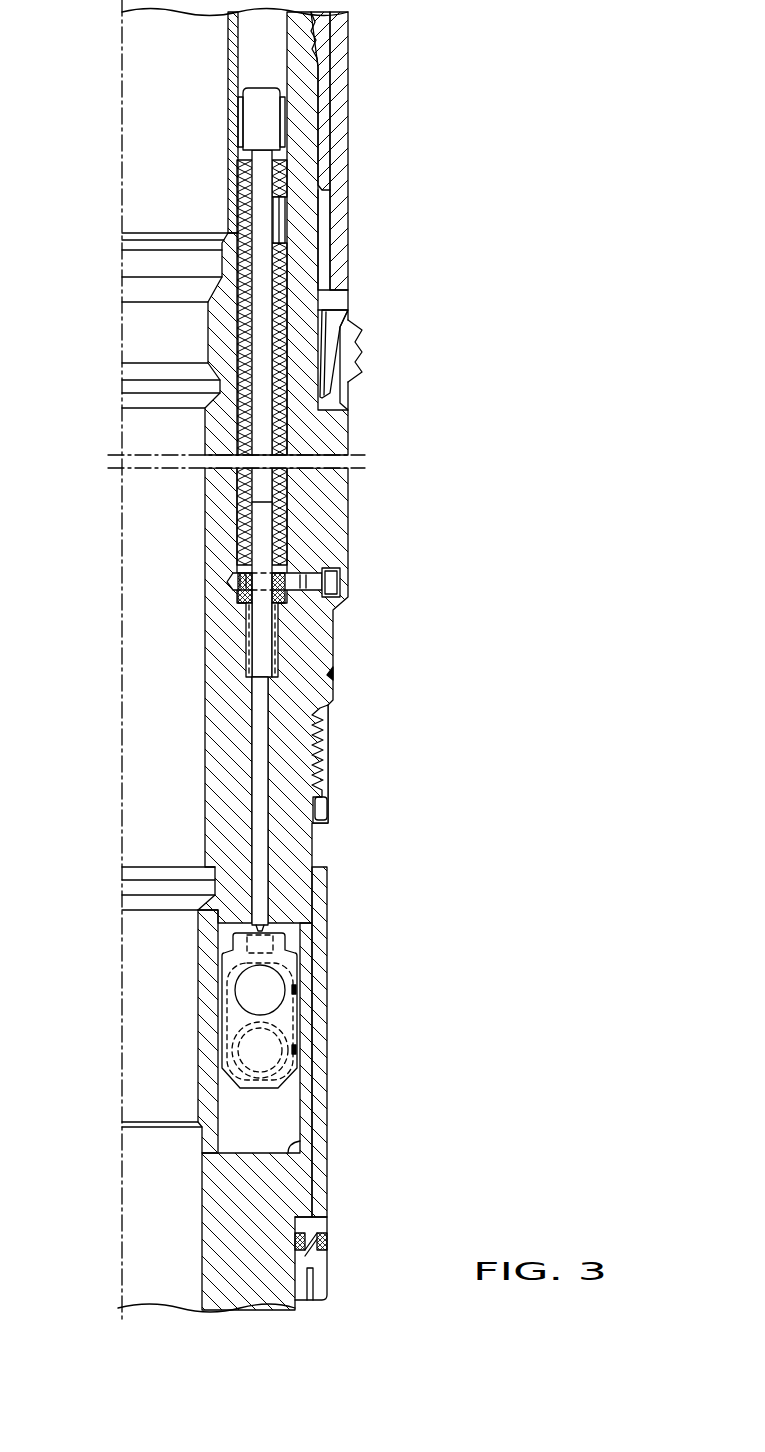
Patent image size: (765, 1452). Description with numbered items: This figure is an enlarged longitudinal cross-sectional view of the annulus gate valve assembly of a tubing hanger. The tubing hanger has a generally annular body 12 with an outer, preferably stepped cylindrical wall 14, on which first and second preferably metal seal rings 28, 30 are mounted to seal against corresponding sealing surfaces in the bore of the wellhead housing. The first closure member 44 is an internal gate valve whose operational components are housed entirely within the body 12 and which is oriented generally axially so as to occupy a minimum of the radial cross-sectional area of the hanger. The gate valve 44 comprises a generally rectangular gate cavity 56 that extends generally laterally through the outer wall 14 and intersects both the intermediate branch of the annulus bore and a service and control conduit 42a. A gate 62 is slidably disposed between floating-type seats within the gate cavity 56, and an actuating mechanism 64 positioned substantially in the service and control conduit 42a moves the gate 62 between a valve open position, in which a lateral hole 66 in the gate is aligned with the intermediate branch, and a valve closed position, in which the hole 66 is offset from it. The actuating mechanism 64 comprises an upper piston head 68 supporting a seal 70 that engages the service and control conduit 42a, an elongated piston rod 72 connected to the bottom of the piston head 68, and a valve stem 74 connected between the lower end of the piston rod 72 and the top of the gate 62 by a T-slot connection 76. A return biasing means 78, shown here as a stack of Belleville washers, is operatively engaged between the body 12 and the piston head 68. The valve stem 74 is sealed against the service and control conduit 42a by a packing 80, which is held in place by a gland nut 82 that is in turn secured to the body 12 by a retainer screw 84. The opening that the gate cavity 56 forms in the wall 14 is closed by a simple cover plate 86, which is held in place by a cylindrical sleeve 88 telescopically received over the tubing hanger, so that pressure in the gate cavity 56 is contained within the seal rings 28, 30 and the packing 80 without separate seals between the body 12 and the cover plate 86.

The body 12 is at (313, 850).
The outer wall 14 is at (348, 502).
The first seal ring 28 is at (321, 1233).
The second seal ring 30 is at (314, 777).
The service and control conduit 42a is at (283, 221).
The first closure member 44 is at (213, 1058).
The gate cavity 56 is at (288, 1050).
The gate 62 is at (294, 1018).
The actuating mechanism 64 is at (226, 511).
The lateral hole 66 is at (281, 987).
The upper piston head 68 is at (280, 153).
The seal 70 is at (285, 117).
The piston rod 72 is at (262, 310).
The valve stem 74 is at (270, 738).
The T-slot connection 76 is at (300, 948).
The return biasing means 78 is at (290, 438).
The packing 80 is at (277, 638).
The gland nut 82 is at (232, 573).
The retainer screw 84 is at (314, 572).
The cover plate 86 is at (300, 1112).
The cylindrical sleeve 88 is at (327, 1099).